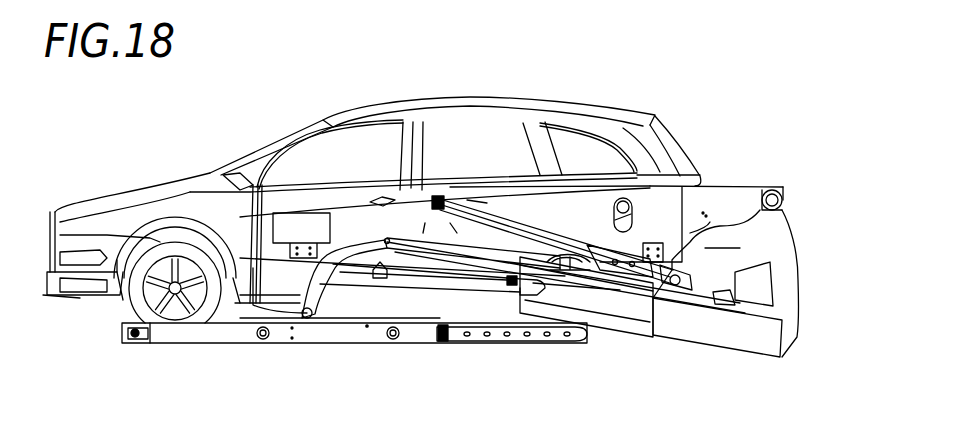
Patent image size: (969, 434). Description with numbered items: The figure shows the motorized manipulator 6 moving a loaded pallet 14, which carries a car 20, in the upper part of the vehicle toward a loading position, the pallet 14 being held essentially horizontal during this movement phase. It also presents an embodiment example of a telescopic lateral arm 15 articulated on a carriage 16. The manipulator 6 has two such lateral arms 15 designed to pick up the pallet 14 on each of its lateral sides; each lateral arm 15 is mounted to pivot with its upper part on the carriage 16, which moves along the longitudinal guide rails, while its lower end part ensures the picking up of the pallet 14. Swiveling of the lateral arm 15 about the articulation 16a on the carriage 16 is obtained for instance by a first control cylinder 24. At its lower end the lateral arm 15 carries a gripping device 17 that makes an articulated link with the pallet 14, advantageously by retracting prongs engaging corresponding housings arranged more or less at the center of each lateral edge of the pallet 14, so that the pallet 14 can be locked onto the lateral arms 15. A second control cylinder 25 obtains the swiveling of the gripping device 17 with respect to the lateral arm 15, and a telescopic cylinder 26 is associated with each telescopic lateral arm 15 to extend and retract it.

The car 20 is at (513, 98).
The first control cylinder 24 is at (552, 232).
The carriage 16 is at (758, 186).
The articulation 16a is at (787, 205).
The manipulator 6 is at (686, 350).
The lateral arm 15 is at (613, 333).
The telescopic cylinder 26 is at (567, 270).
The second control cylinder 25 is at (472, 276).
The gripping device 17 is at (363, 322).
The pallet 14 is at (190, 343).